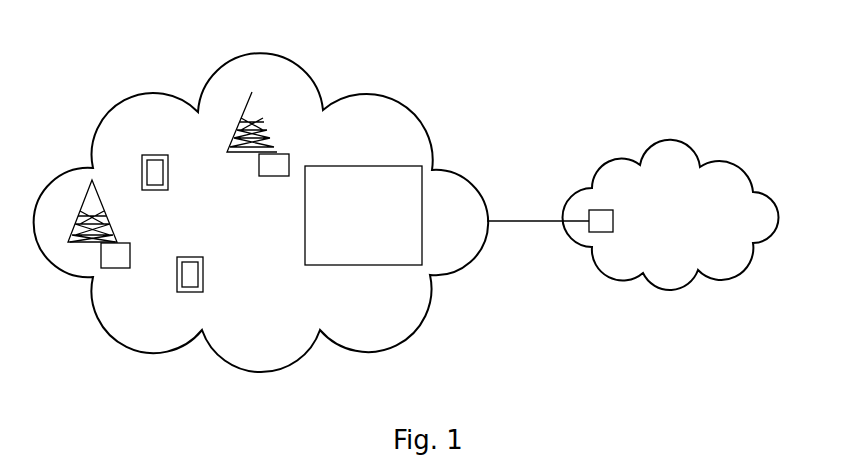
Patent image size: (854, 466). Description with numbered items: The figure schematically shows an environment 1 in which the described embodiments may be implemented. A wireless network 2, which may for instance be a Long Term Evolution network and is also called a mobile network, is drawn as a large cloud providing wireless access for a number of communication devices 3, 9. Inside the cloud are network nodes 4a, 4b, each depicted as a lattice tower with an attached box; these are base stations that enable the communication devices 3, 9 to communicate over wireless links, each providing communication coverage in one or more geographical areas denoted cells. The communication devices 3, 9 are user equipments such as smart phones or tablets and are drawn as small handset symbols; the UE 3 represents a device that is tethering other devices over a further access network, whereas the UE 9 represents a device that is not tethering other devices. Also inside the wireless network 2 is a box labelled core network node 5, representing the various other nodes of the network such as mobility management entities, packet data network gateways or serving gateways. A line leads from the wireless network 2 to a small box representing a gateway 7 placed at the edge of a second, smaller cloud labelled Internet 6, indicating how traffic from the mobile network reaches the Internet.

The communication system 1 is at (427, 84).
The wireless network 2 is at (156, 110).
The communication device 3 is at (203, 270).
The network node 4a is at (282, 174).
The network node 4b is at (120, 255).
The core network node 5 is at (365, 259).
The Internet 6 is at (622, 176).
The gateway node 7 is at (600, 219).
The communication device 9 is at (168, 173).